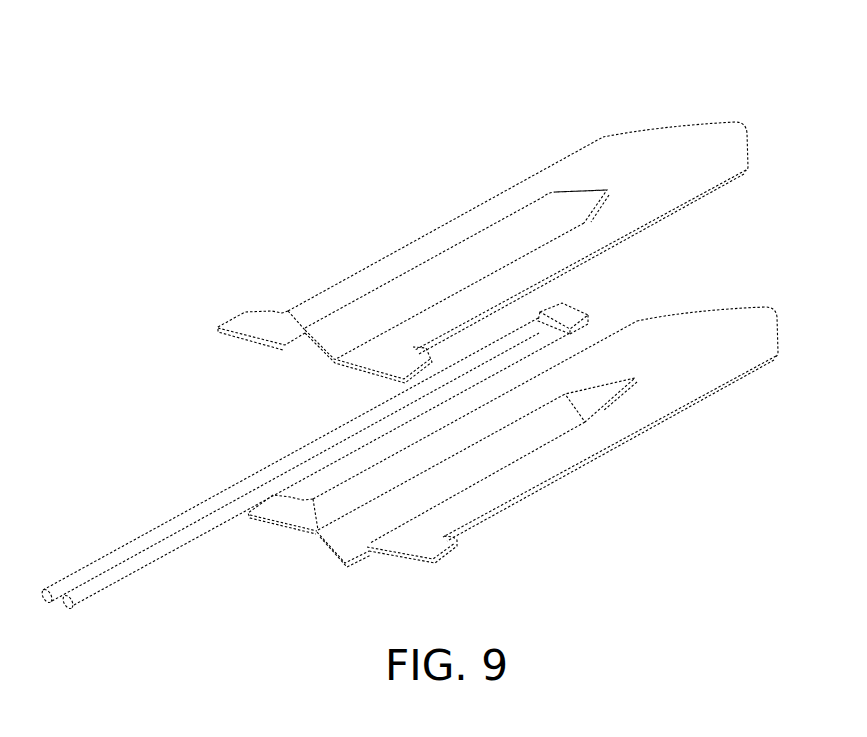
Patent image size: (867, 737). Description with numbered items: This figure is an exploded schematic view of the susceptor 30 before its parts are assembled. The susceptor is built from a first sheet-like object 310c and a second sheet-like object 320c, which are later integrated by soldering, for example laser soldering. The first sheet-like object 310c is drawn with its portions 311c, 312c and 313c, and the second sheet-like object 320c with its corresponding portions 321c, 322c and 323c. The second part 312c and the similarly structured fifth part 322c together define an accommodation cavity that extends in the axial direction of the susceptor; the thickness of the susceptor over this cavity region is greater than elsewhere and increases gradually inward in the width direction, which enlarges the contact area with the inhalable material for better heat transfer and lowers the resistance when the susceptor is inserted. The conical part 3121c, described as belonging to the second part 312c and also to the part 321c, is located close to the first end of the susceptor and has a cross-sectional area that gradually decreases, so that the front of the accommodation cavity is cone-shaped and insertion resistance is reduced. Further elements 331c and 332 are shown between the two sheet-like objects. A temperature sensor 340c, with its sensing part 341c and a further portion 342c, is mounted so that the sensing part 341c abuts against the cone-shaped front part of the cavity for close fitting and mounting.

The susceptor 30 is at (453, 75).
The first sheet-like object 310c is at (465, 214).
The top edge of first plate 311c is at (537, 178).
The second part 312c is at (440, 267).
The conical part 3121c is at (577, 208).
The tab of first plate 313c is at (265, 326).
The second sheet-like object 320c is at (541, 464).
The second part 321c is at (640, 405).
The fifth part 322c is at (537, 445).
The foot of second plate 323c is at (433, 542).
The first foot 331c is at (308, 334).
The second foot 332 is at (358, 534).
The temperature sensor 340c is at (365, 443).
The sensing part 341c is at (580, 308).
The wires 342c is at (247, 483).